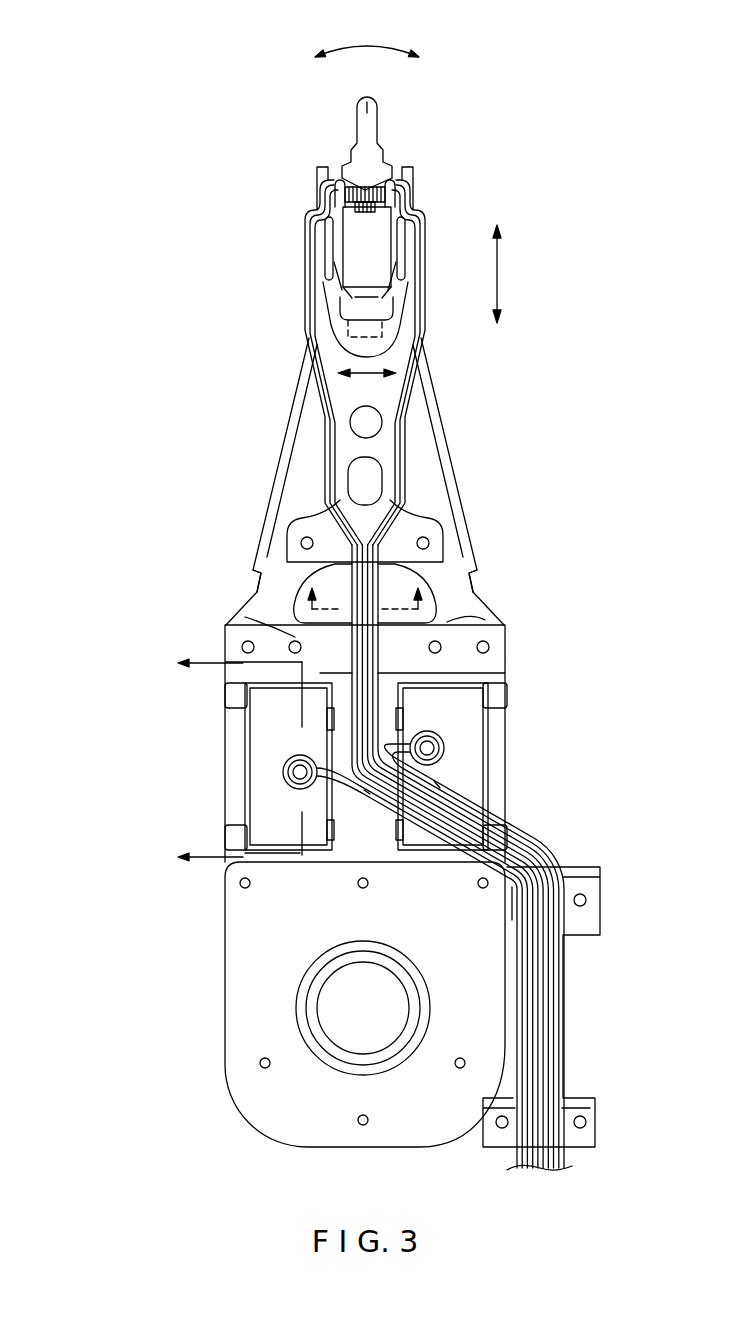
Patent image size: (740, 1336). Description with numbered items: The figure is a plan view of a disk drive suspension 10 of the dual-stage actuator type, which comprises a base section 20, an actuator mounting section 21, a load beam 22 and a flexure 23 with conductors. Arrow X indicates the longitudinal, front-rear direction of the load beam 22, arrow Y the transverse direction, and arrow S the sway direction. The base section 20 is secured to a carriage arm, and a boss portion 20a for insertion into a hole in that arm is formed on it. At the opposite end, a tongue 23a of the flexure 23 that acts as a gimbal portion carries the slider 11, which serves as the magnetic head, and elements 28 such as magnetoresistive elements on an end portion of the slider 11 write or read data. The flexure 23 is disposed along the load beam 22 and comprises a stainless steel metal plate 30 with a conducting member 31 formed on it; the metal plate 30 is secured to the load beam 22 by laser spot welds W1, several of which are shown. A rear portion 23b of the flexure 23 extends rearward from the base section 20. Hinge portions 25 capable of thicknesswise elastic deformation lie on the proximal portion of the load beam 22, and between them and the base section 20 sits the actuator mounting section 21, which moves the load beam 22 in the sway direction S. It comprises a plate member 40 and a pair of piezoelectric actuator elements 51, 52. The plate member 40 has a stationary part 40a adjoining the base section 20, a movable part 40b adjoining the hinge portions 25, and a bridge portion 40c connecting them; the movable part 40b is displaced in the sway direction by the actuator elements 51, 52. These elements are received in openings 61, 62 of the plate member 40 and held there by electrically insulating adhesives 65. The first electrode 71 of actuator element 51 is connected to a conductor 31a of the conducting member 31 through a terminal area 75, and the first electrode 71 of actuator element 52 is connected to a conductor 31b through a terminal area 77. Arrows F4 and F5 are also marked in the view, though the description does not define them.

The suspension 10 is at (205, 376).
The slider 11 is at (358, 255).
The base section 20 is at (245, 947).
The boss portion 20a is at (297, 1020).
The actuator mounting section 21 is at (130, 730).
The load beam 22 is at (295, 462).
The flexure 23 is at (315, 405).
The tongue 23a is at (333, 268).
The rear portion 23b is at (565, 1060).
The hinge portions 25 is at (255, 592).
The elements 28 is at (368, 212).
The metal plate 30 is at (405, 520).
The conducting member 31 is at (508, 822).
The conductor 31a is at (367, 793).
The conductor 31b is at (437, 785).
The plate member 40 is at (225, 912).
The stationary part 40a is at (318, 858).
The movable part 40b is at (312, 673).
The bridge portion 40c is at (337, 795).
The actuator element 51 is at (248, 768).
The actuator element 52 is at (485, 760).
The opening 61 is at (232, 740).
The opening 62 is at (503, 720).
The electrically insulating adhesives 65 is at (232, 697).
The first electrode 71 is at (262, 722).
The terminal area 75 is at (278, 757).
The terminal area 77 is at (452, 737).
The welds W1 is at (430, 540).
The force direction F4 is at (364, 587).
The force direction F5 is at (195, 760).
The arrow X is at (500, 272).
The arrow Y is at (366, 376).
The arrow S is at (366, 45).